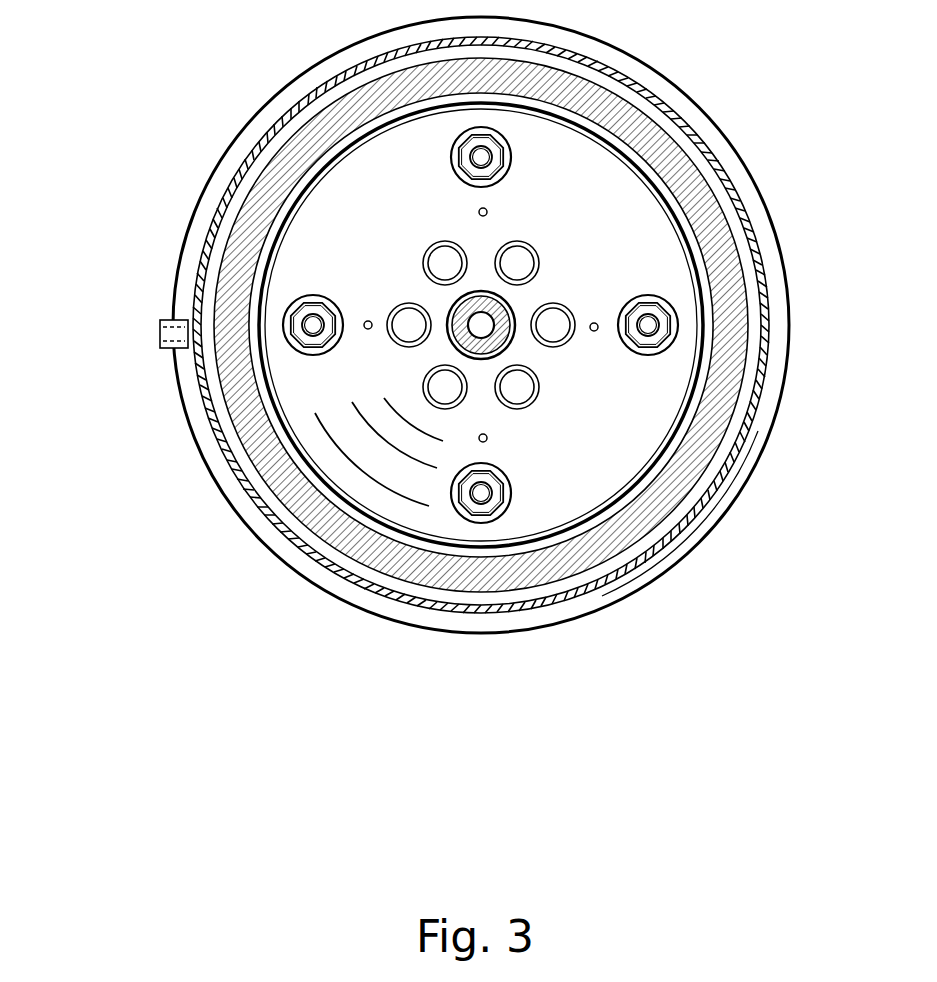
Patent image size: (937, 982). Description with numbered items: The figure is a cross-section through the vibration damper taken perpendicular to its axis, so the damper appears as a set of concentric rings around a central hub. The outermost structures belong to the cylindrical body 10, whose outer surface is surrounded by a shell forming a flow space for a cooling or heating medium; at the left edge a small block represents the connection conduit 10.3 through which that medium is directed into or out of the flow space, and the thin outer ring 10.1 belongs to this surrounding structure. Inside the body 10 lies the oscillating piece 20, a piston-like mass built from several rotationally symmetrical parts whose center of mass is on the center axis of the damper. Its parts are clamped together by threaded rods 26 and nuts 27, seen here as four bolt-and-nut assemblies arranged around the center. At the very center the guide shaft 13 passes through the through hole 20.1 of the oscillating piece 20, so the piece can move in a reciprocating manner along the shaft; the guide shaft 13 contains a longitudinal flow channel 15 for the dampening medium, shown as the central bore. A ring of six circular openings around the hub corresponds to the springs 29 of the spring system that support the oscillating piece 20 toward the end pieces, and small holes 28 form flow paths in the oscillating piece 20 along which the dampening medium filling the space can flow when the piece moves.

The cylindrical body 10 is at (215, 338).
The housing outer shell 10.1 is at (177, 305).
The connection conduit 10.3 is at (160, 338).
The guide shaft 13 is at (452, 305).
The flow channel 15 is at (480, 326).
The oscillating piece 20 is at (632, 227).
The through hole 20.1 is at (515, 312).
The threaded rod 26 is at (480, 157).
The nut 27 is at (476, 161).
The flow path 28 is at (486, 210).
The spring 29 is at (430, 403).